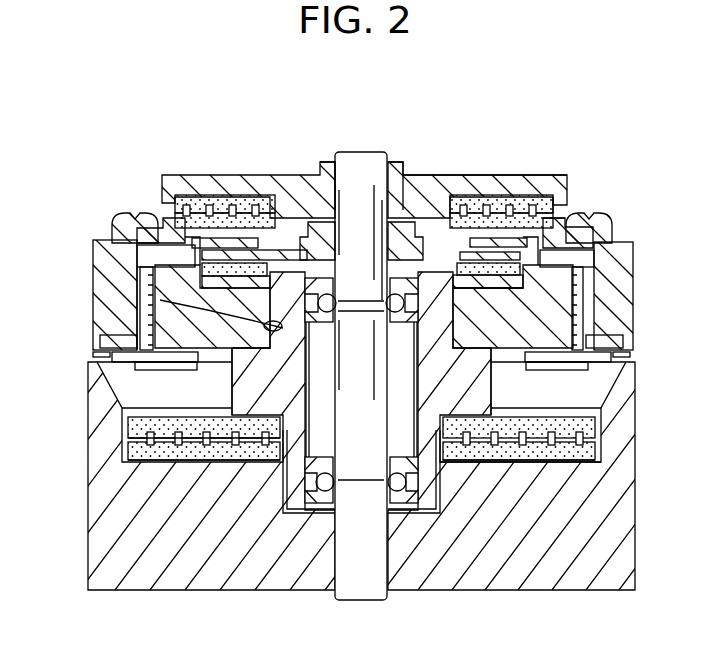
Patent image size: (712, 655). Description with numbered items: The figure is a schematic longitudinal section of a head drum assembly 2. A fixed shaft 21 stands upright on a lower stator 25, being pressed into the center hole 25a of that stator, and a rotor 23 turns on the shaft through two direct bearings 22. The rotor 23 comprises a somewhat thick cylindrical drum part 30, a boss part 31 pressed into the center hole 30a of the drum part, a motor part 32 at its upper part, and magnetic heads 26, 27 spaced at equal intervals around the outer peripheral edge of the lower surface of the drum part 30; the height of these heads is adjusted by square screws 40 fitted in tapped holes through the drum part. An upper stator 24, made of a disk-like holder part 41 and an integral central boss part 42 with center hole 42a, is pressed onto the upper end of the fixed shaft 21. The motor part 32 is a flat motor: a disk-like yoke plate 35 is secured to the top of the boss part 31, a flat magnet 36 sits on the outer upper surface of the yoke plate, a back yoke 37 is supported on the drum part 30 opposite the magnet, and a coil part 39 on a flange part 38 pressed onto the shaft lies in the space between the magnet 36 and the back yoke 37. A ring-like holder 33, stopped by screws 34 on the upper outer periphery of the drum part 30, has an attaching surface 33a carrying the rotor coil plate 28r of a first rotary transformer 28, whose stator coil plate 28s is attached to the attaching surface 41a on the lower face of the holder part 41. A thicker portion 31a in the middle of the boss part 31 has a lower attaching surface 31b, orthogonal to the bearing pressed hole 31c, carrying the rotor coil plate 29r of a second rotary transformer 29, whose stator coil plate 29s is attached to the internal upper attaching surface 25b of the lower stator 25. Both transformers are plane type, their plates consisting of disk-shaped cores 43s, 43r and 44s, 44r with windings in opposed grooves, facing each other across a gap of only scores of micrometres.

The head drum assembly 2 is at (578, 150).
The fixed shaft 21 is at (361, 160).
The bearings 22 is at (306, 285).
The rotor 23 is at (622, 297).
The upper stator 24 is at (516, 182).
The lower stator 25 is at (620, 542).
The center hole 25a is at (342, 598).
The attaching surface 25b is at (519, 453).
The magnetic heads 26 is at (125, 344).
The magnetic heads 27 is at (350, 388).
The first rotary transformer 28 is at (552, 215).
The rotor coil plate 28r is at (180, 225).
The stator coil plate 28s is at (185, 222).
The second rotary transformer 29 is at (590, 436).
The rotor coil plate 29r is at (147, 448).
The stator coil plate 29s is at (155, 452).
The drum part 30 is at (105, 285).
The center hole 30a is at (148, 297).
The boss part 31 is at (604, 412).
The thicker portion 31a is at (240, 373).
The attaching surface 31b is at (612, 440).
The pressed hole 31c is at (268, 488).
The motor part 32 is at (620, 258).
The ring-like holder 33 is at (615, 243).
The attaching surface 33a is at (556, 228).
The screws 34 is at (120, 220).
The yoke plate 35 is at (424, 285).
The magnet 36 is at (452, 248).
The back yoke 37 is at (245, 250).
The flange part 38 is at (305, 222).
The coil part 39 is at (262, 238).
The square screws 40 is at (147, 290).
The holder part 41 is at (190, 182).
The attaching surface 41a is at (540, 205).
The boss part 42 is at (326, 165).
The center hole 42a is at (392, 160).
The core 43r is at (205, 268).
The core 43s is at (200, 205).
The core 44r is at (147, 425).
The core 44s is at (135, 458).